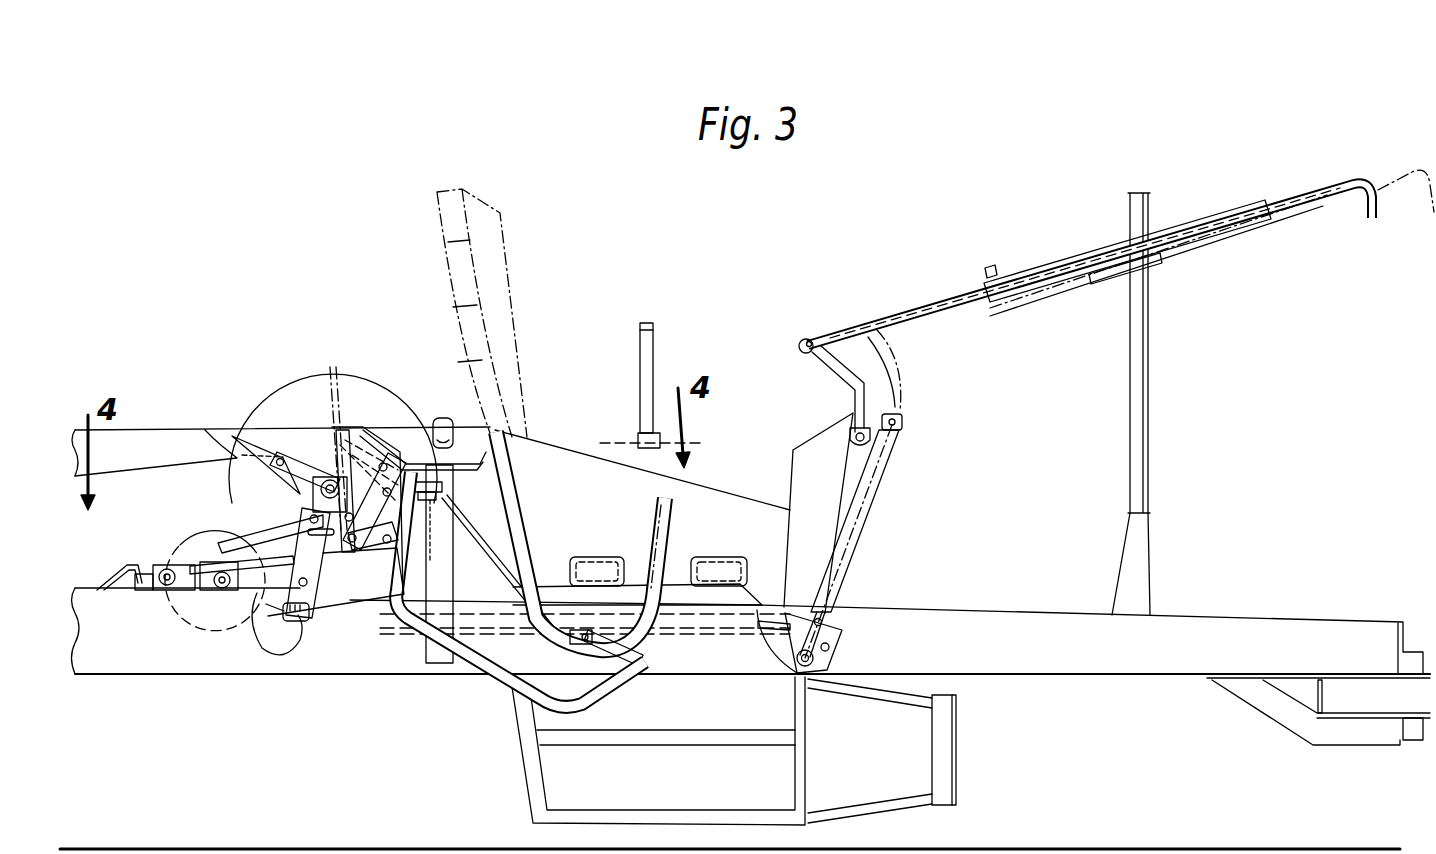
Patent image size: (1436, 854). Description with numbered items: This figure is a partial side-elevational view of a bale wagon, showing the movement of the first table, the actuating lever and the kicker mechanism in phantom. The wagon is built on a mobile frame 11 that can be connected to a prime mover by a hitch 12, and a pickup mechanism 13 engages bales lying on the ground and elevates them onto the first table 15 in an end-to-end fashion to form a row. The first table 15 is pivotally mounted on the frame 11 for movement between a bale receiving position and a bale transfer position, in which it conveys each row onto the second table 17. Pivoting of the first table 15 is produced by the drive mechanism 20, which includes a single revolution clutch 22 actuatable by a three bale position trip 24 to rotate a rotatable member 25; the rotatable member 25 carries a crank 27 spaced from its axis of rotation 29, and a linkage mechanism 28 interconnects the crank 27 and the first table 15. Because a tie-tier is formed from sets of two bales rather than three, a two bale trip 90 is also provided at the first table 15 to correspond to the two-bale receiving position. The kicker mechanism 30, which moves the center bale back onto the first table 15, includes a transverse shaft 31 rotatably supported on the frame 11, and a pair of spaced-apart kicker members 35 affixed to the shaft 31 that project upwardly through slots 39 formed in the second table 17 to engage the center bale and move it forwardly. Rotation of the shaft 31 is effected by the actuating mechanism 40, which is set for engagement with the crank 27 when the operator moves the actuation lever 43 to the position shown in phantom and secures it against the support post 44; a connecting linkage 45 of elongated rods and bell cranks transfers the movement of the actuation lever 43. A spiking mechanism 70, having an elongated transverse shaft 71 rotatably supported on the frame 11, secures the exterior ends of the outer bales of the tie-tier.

The mobile frame 11 is at (1228, 615).
The hitch 12 is at (1414, 740).
The pickup mechanism 13 is at (957, 758).
The first table 15 is at (503, 225).
The second table 17 is at (168, 430).
The drive mechanism 20 is at (163, 621).
The single revolution clutch 22 is at (221, 524).
The three bale position trip 24 is at (678, 502).
The rotatable member 25 is at (165, 590).
The crank 27 is at (168, 565).
The linkage mechanism 28 is at (325, 556).
The axis of rotation 29 is at (227, 630).
The kicker mechanism 30 is at (258, 415).
The transverse shaft 31 is at (312, 493).
The kicker members 35 is at (262, 460).
The slots 39 is at (382, 418).
The actuating mechanism 40 is at (292, 636).
The actuation lever 43 is at (1300, 192).
The support post 44 is at (1147, 203).
The connecting linkage 45 is at (843, 588).
The spiking mechanism 70 is at (308, 420).
The elongated transverse shaft 71 is at (398, 430).
The two bale trip 90 is at (598, 688).